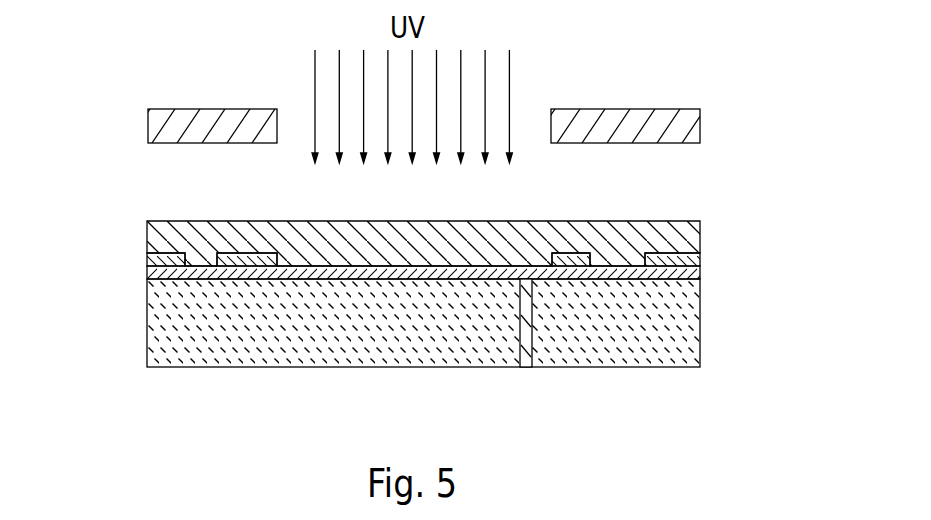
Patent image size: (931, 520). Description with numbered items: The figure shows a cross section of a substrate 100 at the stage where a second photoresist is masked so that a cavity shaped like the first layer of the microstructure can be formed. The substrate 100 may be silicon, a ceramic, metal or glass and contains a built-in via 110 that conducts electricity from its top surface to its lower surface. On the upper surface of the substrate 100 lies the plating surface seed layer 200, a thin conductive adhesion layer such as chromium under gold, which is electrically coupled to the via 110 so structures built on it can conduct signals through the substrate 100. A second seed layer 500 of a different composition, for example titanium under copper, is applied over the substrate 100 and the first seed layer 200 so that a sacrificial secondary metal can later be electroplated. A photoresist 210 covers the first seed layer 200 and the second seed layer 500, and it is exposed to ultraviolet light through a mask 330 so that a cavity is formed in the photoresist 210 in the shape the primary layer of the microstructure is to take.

The substrate 100 is at (158, 348).
The via 110 is at (527, 348).
The plating surface seed layer 200 is at (147, 275).
The photoresist 210 is at (692, 235).
The mask 330 is at (218, 117).
The second seed layer 500 is at (248, 258).